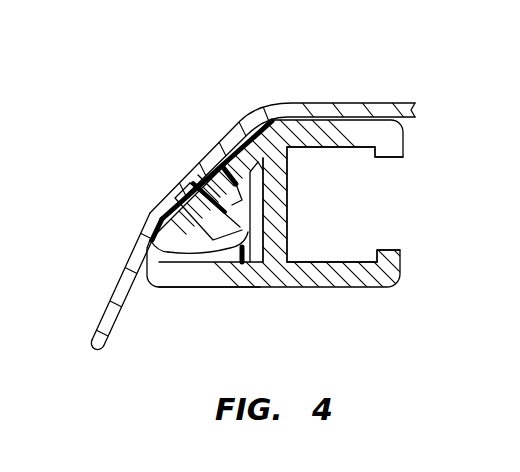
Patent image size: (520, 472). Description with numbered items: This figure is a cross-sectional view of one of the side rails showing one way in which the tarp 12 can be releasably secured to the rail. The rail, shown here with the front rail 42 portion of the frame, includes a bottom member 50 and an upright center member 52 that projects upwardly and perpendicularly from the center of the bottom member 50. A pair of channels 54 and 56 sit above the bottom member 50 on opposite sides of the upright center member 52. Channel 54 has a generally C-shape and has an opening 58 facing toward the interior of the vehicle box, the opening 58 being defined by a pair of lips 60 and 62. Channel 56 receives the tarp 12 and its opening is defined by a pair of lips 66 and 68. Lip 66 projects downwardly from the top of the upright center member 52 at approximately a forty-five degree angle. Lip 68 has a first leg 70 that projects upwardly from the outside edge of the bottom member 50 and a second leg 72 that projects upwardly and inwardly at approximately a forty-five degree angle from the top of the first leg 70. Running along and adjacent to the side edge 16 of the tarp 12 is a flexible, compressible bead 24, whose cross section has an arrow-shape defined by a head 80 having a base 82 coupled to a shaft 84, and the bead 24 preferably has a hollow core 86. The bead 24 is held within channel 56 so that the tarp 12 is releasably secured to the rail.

The tarp 12 is at (352, 101).
The side edge 16 is at (97, 307).
The flexible, compressible bead 24 is at (240, 264).
The front rail 42 is at (181, 291).
The bottom member 50 is at (296, 289).
The upright center member 52 is at (288, 205).
The channel 54 is at (366, 204).
The channel 56 is at (253, 246).
The opening 58 is at (391, 209).
The lip 60 is at (405, 157).
The lip 62 is at (400, 252).
The lip 66 is at (222, 167).
The lip 68 is at (148, 226).
The first leg 70 is at (100, 337).
The second leg 72 is at (148, 248).
The head 80 is at (268, 188).
The base 82 is at (232, 185).
The shaft 84 is at (200, 182).
The hollow core 86 is at (210, 188).